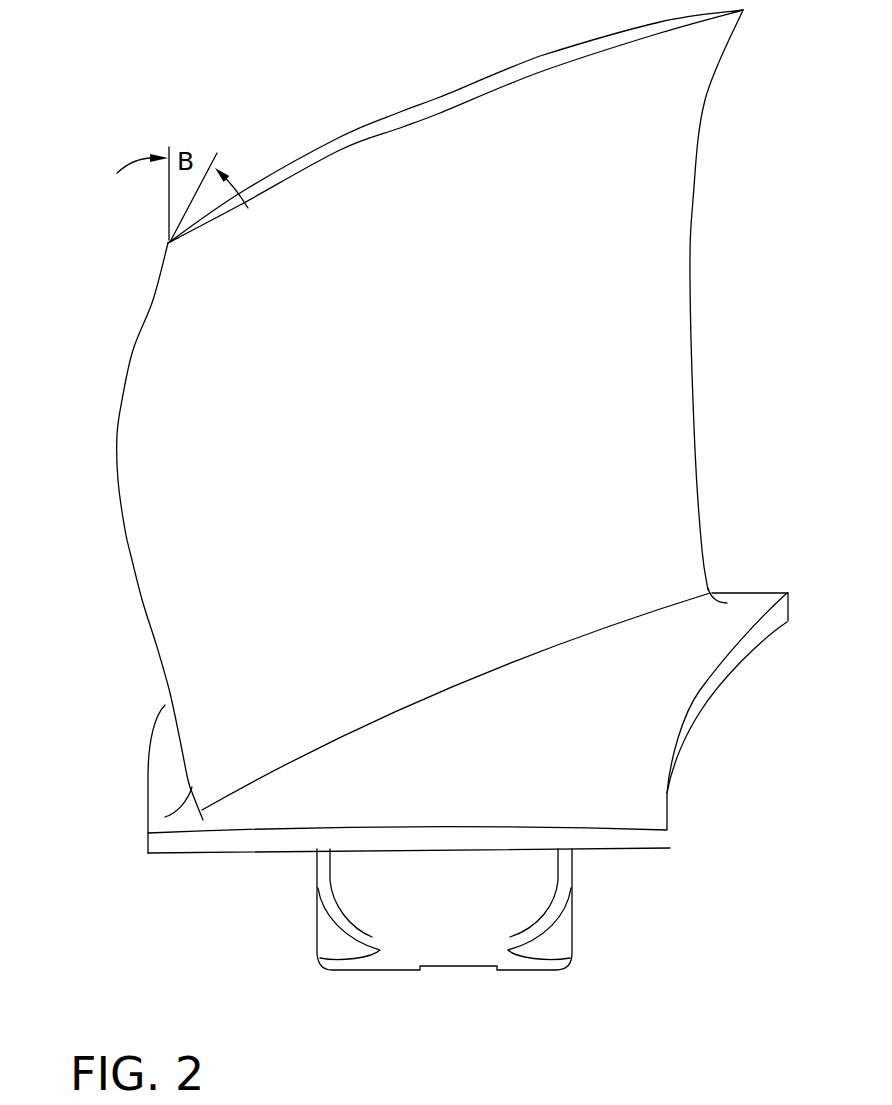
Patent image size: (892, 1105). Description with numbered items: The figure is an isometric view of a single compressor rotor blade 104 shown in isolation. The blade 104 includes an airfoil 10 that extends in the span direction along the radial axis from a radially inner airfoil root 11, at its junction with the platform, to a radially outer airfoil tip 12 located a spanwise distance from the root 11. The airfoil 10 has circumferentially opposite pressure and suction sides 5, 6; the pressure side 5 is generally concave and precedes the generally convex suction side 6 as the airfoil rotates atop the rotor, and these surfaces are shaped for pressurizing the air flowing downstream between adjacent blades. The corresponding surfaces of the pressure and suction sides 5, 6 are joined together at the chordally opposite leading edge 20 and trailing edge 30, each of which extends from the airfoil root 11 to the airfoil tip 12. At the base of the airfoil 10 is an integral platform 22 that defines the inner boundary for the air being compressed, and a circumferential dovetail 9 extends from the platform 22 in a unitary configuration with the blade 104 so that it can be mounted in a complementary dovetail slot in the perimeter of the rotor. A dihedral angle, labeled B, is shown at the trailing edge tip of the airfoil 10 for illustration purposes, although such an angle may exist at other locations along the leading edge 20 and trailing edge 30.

The pressure side 5 is at (522, 80).
The suction side 6 is at (350, 133).
The circumferential dovetail 9 is at (430, 917).
The airfoil 10 is at (405, 411).
The airfoil root 11 is at (650, 618).
The airfoil tip 12 is at (459, 232).
The leading edge 20 is at (703, 125).
The platform 22 is at (655, 672).
The trailing edge 30 is at (117, 425).
The compressor rotor blade 104 is at (124, 741).